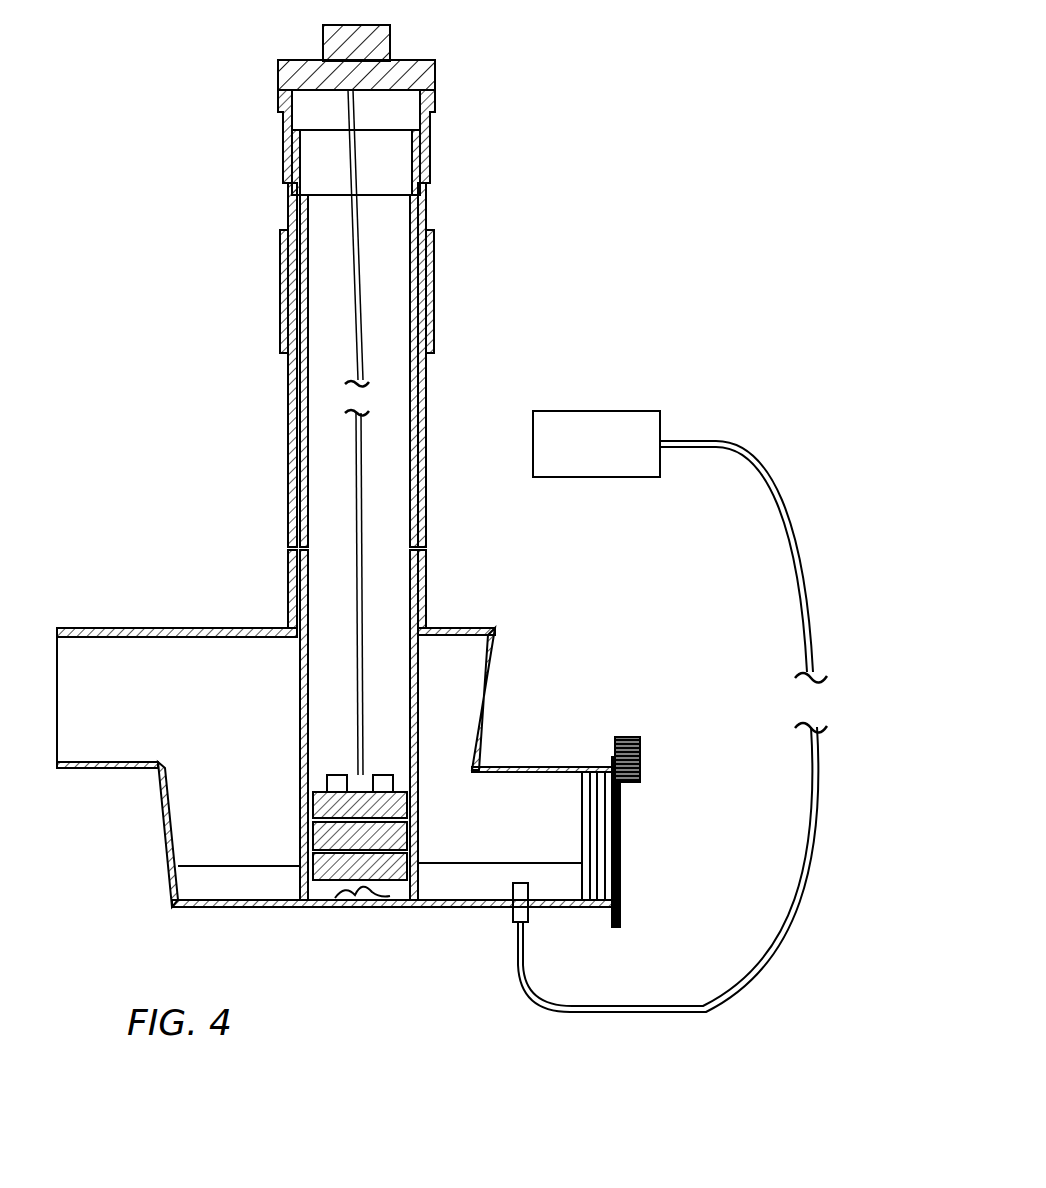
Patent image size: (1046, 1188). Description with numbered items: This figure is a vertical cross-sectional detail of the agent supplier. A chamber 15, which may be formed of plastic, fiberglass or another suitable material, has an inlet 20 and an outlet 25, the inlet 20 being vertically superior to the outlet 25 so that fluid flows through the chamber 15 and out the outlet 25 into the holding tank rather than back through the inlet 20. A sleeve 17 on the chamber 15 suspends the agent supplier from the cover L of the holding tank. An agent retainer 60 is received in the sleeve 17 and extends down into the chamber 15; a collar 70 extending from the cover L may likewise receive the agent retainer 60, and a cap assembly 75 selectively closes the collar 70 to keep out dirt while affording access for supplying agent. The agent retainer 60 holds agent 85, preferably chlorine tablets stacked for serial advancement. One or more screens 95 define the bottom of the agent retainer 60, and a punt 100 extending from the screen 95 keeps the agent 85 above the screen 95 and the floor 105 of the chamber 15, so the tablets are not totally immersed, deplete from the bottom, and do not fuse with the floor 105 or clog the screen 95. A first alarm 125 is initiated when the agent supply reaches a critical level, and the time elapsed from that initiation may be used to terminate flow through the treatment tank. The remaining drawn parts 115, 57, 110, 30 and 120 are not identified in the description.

The cap assembly 75 is at (438, 148).
The collar 70 is at (425, 215).
The agent retainer 60 is at (420, 202).
The cover L is at (434, 261).
The sleeve 17 is at (427, 370).
The wire 115 is at (359, 468).
The inlet 20 is at (78, 627).
The chamber 15 is at (455, 625).
The outlet 25 is at (538, 765).
The floor 105 is at (203, 900).
The water level 57 is at (205, 872).
The upper block 110 is at (407, 800).
The agent 85 is at (409, 830).
The screen 95 is at (388, 905).
The punt 100 is at (340, 905).
The valve 30 is at (621, 818).
The sensor 120 is at (528, 910).
The first alarm 125 is at (618, 461).